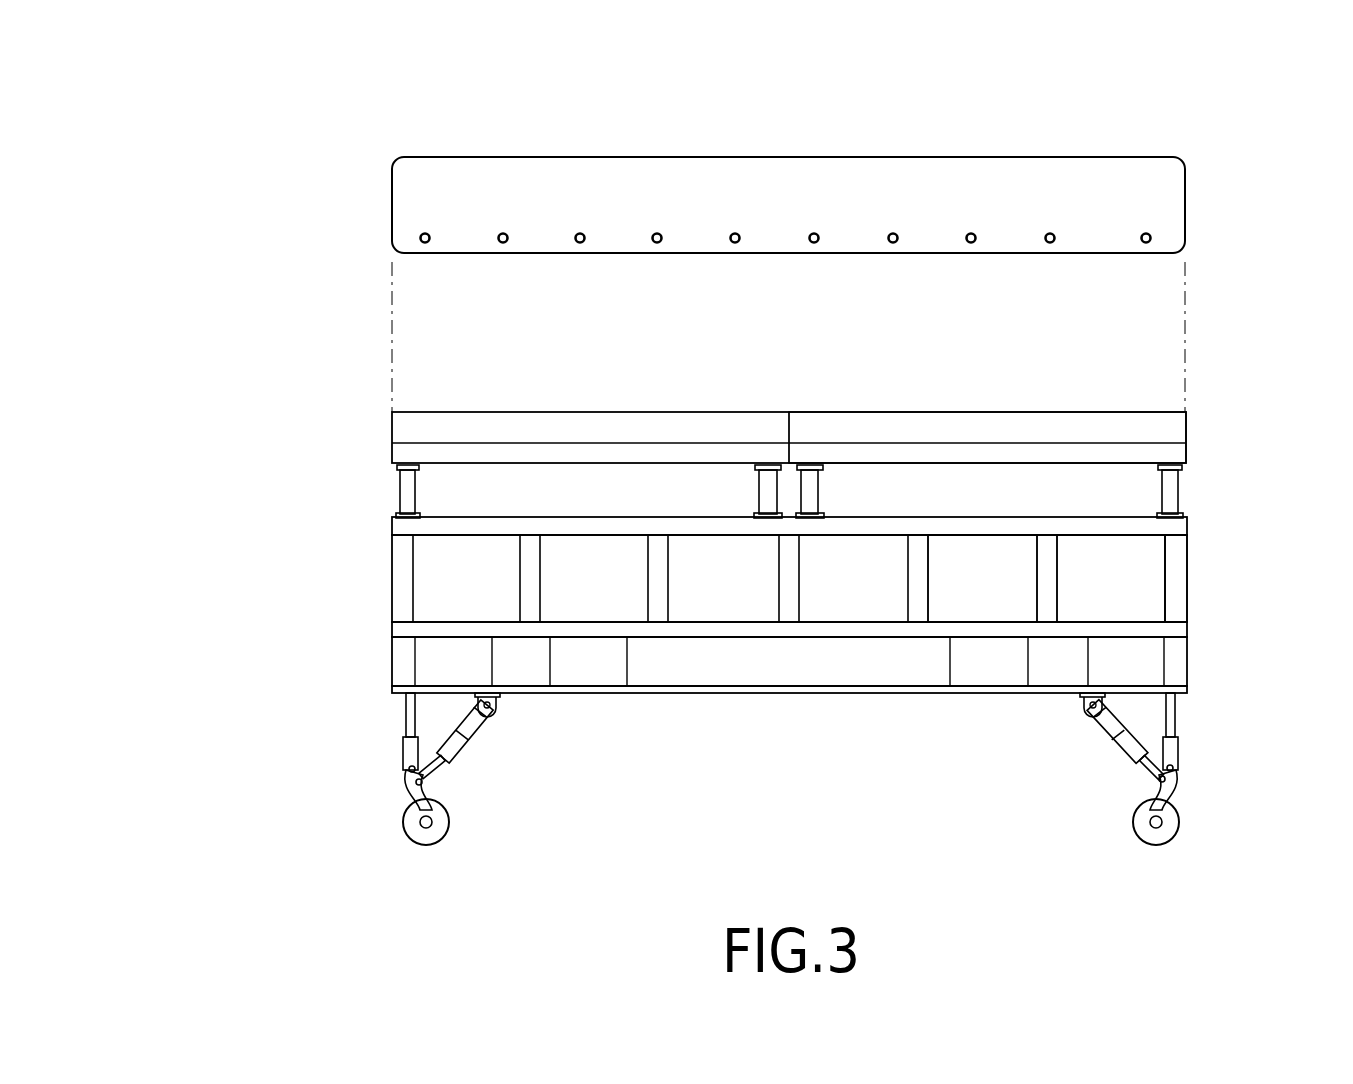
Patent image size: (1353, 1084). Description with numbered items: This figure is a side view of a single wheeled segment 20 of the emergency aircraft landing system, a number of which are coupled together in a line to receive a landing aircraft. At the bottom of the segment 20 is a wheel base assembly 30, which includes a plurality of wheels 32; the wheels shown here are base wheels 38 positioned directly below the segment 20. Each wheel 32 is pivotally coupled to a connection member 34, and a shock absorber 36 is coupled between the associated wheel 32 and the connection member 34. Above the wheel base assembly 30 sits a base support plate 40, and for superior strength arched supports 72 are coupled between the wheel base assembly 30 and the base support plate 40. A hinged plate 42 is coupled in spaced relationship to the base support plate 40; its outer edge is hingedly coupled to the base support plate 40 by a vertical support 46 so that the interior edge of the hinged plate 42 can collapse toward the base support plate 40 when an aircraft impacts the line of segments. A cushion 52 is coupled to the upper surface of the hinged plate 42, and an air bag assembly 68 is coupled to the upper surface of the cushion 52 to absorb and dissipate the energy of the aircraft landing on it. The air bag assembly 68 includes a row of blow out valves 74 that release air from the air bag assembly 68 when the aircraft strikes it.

The wheeled segment 20 is at (293, 488).
The wheel base assembly 30 is at (791, 774).
The wheel 32 is at (417, 837).
The connection member 34 is at (500, 697).
The shock absorber 36 is at (460, 758).
The base wheel 38 is at (378, 741).
The base support plate 40 is at (960, 527).
The hinged plate 42 is at (1000, 453).
The vertical support 46 is at (765, 489).
The cushion 52 is at (1062, 420).
The air bag assembly 68 is at (1127, 177).
The arched support 72 is at (917, 598).
The blow out valve 74 is at (1151, 235).